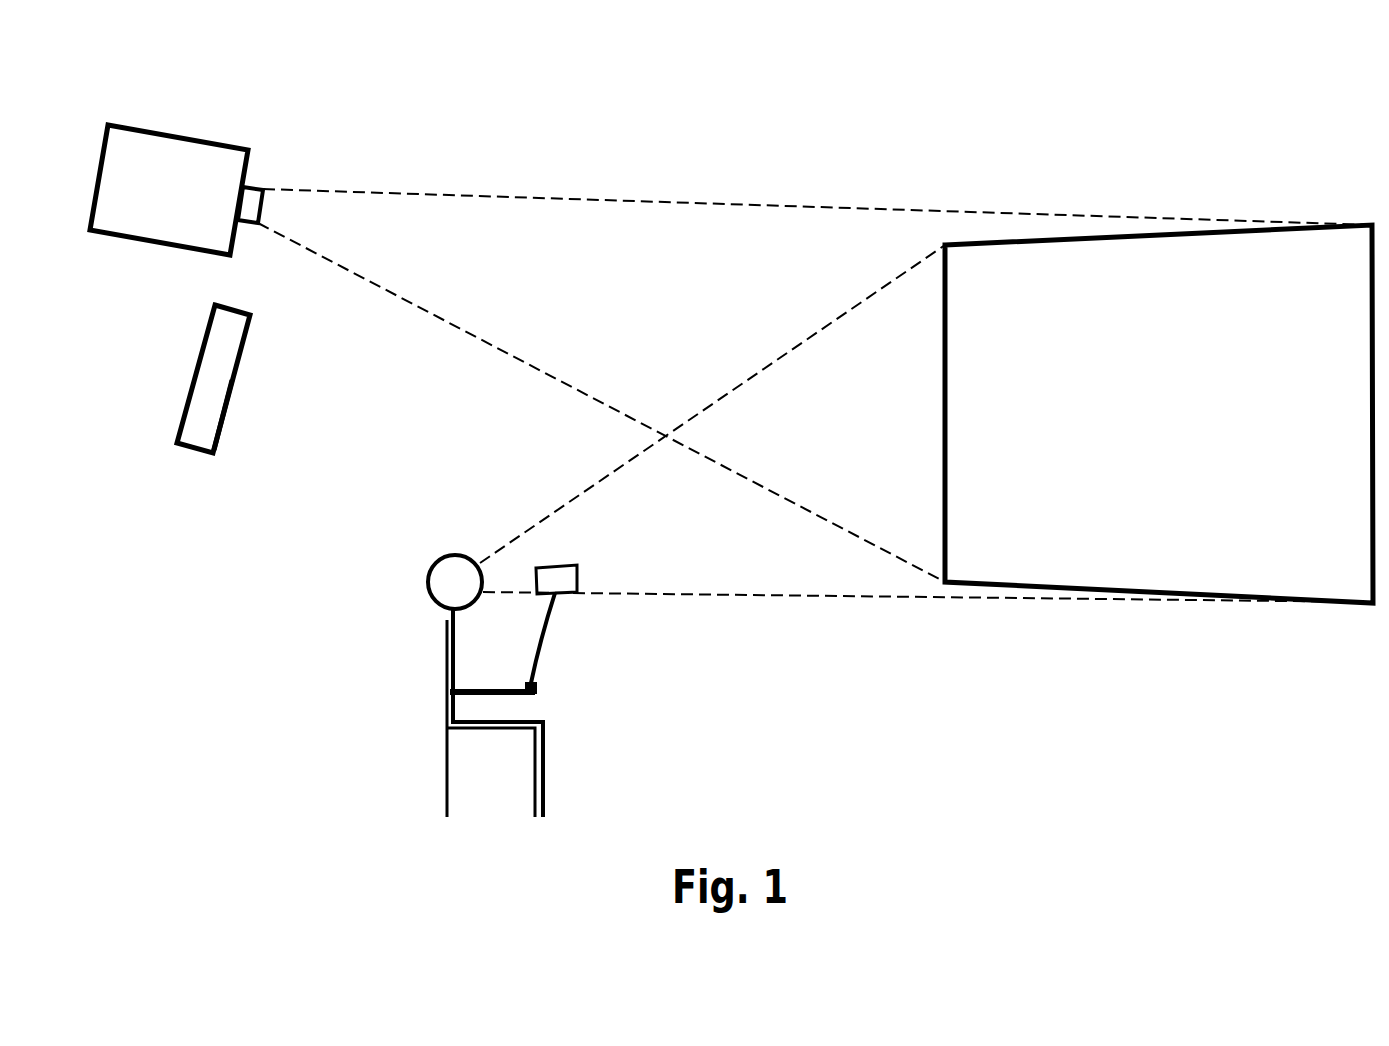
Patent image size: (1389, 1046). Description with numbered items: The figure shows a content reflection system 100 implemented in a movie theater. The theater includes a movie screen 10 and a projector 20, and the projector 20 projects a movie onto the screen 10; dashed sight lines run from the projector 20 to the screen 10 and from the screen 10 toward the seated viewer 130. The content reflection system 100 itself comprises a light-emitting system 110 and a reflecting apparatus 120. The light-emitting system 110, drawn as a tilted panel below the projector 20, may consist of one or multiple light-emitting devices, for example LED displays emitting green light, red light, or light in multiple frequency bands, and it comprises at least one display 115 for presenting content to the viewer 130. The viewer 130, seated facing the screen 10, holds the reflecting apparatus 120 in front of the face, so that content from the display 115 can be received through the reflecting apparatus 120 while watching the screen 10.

The content reflection system 100 is at (1130, 134).
The projector 20 is at (157, 155).
The light-emitting system 110 is at (233, 340).
The display 115 is at (228, 400).
The movie screen 10 is at (1192, 548).
The viewer 130 is at (457, 638).
The reflecting apparatus 120 is at (572, 625).